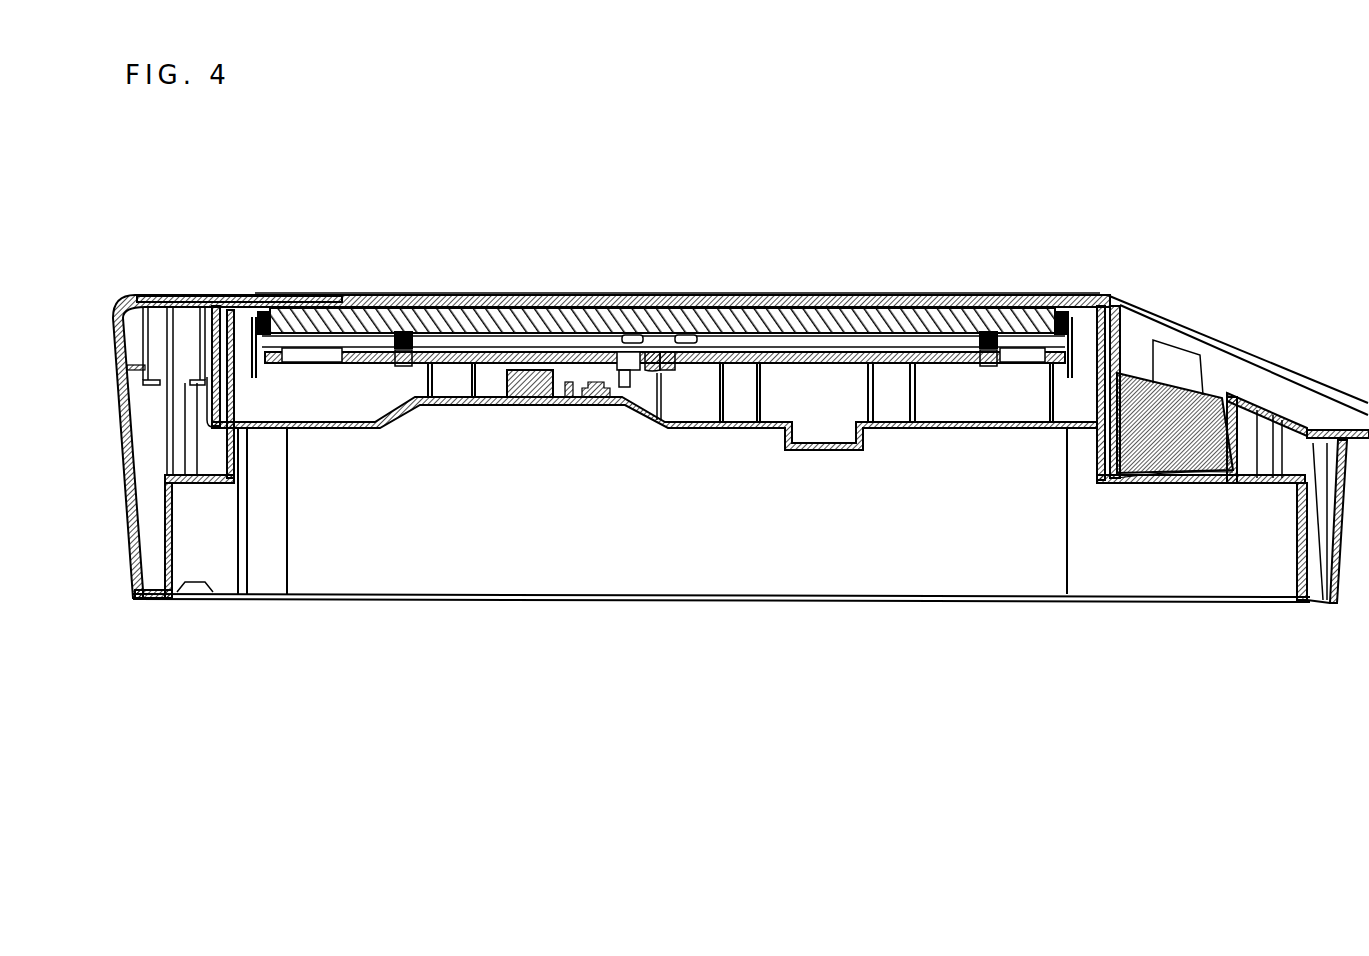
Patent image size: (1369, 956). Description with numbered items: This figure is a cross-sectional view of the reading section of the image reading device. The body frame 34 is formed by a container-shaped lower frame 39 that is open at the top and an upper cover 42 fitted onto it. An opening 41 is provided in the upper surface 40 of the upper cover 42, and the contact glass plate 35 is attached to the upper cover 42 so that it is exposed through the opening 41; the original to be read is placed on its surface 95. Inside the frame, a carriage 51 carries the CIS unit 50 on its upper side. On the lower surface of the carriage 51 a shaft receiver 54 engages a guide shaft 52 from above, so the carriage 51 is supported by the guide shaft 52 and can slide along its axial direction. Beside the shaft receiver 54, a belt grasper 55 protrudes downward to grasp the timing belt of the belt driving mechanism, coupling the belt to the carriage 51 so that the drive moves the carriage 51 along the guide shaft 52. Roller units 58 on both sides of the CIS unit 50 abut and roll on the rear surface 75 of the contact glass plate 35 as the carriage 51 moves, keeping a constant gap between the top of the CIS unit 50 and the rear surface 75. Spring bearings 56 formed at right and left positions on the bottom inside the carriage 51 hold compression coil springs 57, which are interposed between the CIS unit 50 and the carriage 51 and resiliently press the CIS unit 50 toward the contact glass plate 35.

The body frame 34 is at (741, 451).
The contact glass plate 35 is at (520, 298).
The lower frame 39 is at (153, 599).
The upper surface 40 is at (740, 388).
The opening 41 is at (654, 333).
The upper cover 42 is at (183, 297).
The CIS unit 50 is at (607, 298).
The carriage 51 is at (792, 375).
The guide shaft 52 is at (667, 372).
The shaft receiver 54 is at (675, 367).
The belt grasper 55 is at (623, 403).
The spring bearing 56 is at (402, 367).
The compression coil spring 57 is at (370, 365).
The roller unit 58 is at (261, 368).
The rear surface 75 is at (753, 298).
The surface 95 is at (348, 297).